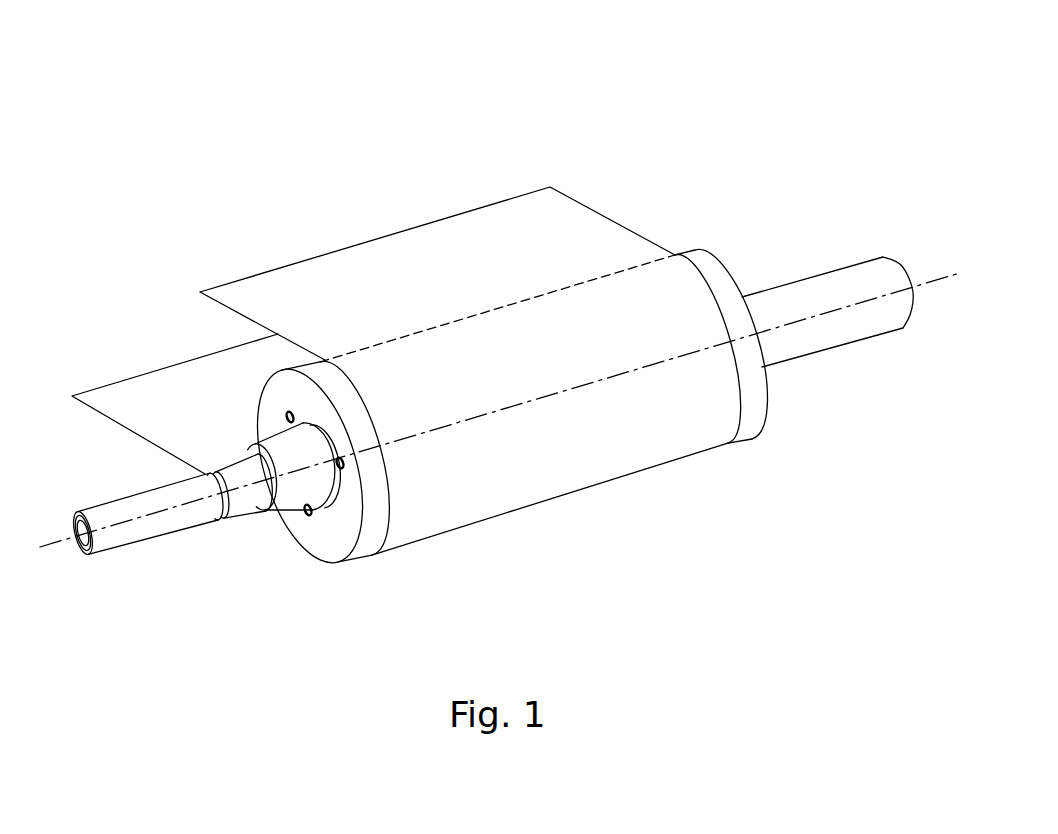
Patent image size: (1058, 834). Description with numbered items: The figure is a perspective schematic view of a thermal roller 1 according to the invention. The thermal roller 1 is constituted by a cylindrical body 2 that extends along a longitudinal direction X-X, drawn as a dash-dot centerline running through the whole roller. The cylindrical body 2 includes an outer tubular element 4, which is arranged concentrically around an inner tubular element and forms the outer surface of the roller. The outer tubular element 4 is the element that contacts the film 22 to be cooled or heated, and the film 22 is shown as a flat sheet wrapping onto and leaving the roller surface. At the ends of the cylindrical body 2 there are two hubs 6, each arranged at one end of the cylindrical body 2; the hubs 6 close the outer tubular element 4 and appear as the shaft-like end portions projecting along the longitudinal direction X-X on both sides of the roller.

The thermal roller 1 is at (752, 174).
The cylindrical body 2 is at (717, 296).
The outer tubular element 4 is at (752, 413).
The hubs 6 is at (837, 330).
The film 22 is at (528, 212).
The longitudinal direction X is at (952, 276).